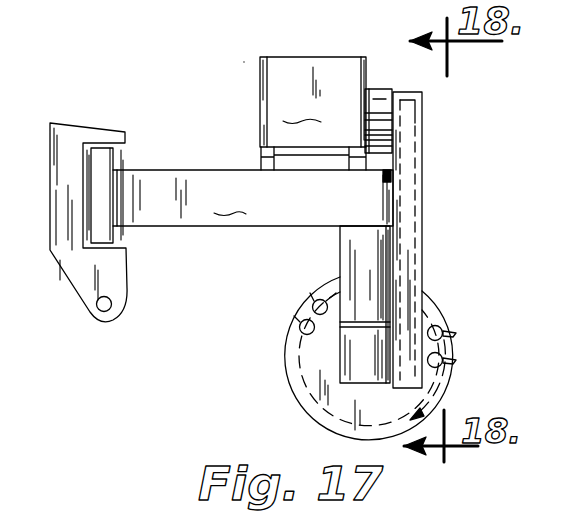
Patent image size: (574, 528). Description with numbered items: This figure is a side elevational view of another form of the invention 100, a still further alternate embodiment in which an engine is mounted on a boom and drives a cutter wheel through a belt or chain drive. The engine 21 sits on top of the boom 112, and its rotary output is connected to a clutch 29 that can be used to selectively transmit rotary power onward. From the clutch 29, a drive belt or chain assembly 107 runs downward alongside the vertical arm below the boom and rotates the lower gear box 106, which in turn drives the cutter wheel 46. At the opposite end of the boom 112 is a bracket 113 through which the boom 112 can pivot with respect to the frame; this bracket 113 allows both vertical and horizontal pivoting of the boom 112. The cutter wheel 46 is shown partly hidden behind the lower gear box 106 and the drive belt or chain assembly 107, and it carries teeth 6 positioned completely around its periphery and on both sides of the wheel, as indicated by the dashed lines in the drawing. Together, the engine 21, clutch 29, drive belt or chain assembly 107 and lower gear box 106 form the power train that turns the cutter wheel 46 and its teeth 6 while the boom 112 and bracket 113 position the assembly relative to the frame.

The another form of the invention 100 is at (245, 64).
The engine 21 is at (306, 72).
The clutch 29 is at (378, 88).
The drive belt or chain assembly 107 is at (426, 123).
The boom 112 is at (172, 178).
The bracket 113 is at (84, 290).
The lower gear box 106 is at (338, 362).
The cutter wheel 46 is at (432, 388).
The teeth 6 is at (444, 333).